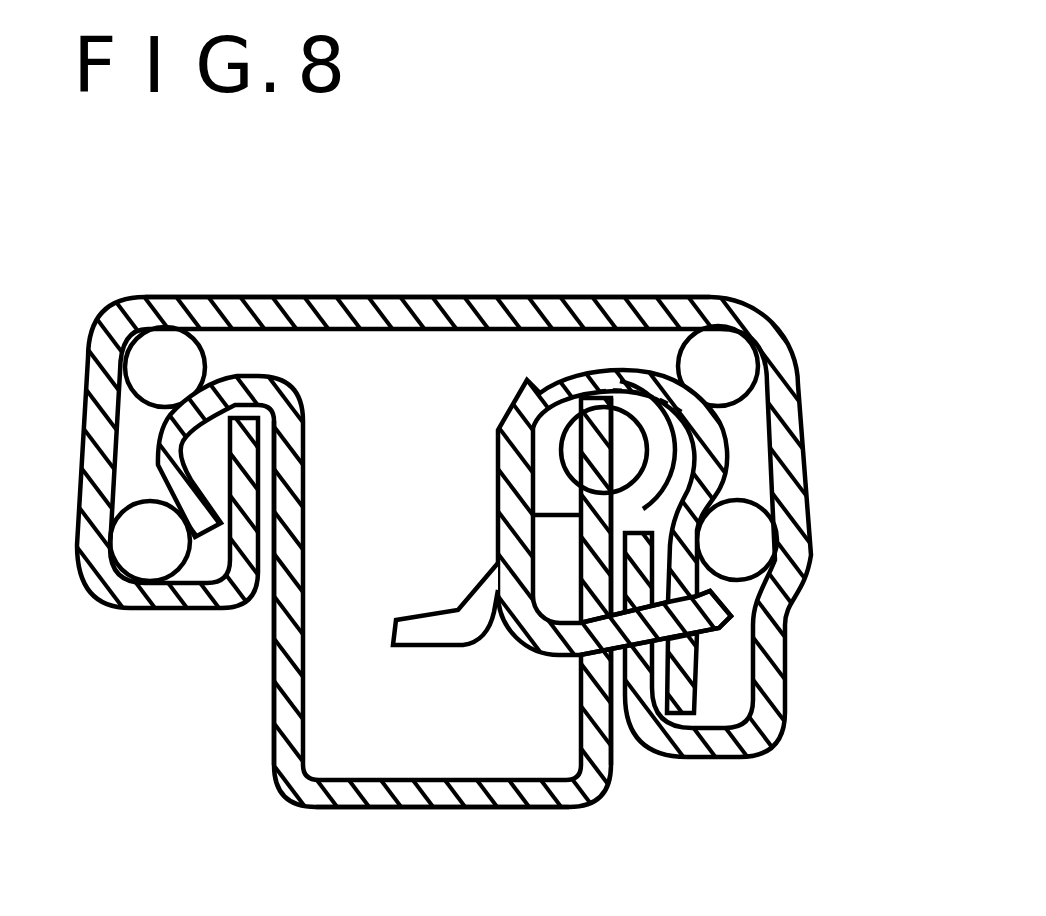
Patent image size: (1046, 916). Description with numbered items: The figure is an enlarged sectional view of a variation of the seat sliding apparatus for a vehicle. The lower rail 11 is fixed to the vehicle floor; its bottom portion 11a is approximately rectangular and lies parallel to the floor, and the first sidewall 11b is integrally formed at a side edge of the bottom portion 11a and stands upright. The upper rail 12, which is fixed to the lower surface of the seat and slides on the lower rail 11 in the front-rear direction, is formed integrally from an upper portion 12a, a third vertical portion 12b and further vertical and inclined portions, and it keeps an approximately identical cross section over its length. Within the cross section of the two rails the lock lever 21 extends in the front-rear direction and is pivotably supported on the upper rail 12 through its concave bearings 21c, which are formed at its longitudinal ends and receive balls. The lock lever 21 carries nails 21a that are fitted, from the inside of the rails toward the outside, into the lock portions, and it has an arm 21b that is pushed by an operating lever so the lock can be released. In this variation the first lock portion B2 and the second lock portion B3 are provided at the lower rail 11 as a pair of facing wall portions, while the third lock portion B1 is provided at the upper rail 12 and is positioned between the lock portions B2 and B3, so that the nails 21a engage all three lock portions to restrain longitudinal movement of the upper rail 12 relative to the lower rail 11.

The lower rail 11 is at (523, 593).
The bottom portion 11a is at (464, 795).
The first sidewall 11b is at (276, 746).
The upper rail 12 is at (523, 509).
The upper portion 12a is at (455, 296).
The third vertical portion 12b is at (90, 456).
The lock lever 21 is at (523, 551).
The nails 21a is at (735, 602).
The arm 21b is at (434, 618).
The bearings 21c is at (594, 392).
The third lock portion B1 is at (664, 598).
The first lock portion B2 is at (572, 659).
The second lock portion B3 is at (706, 648).